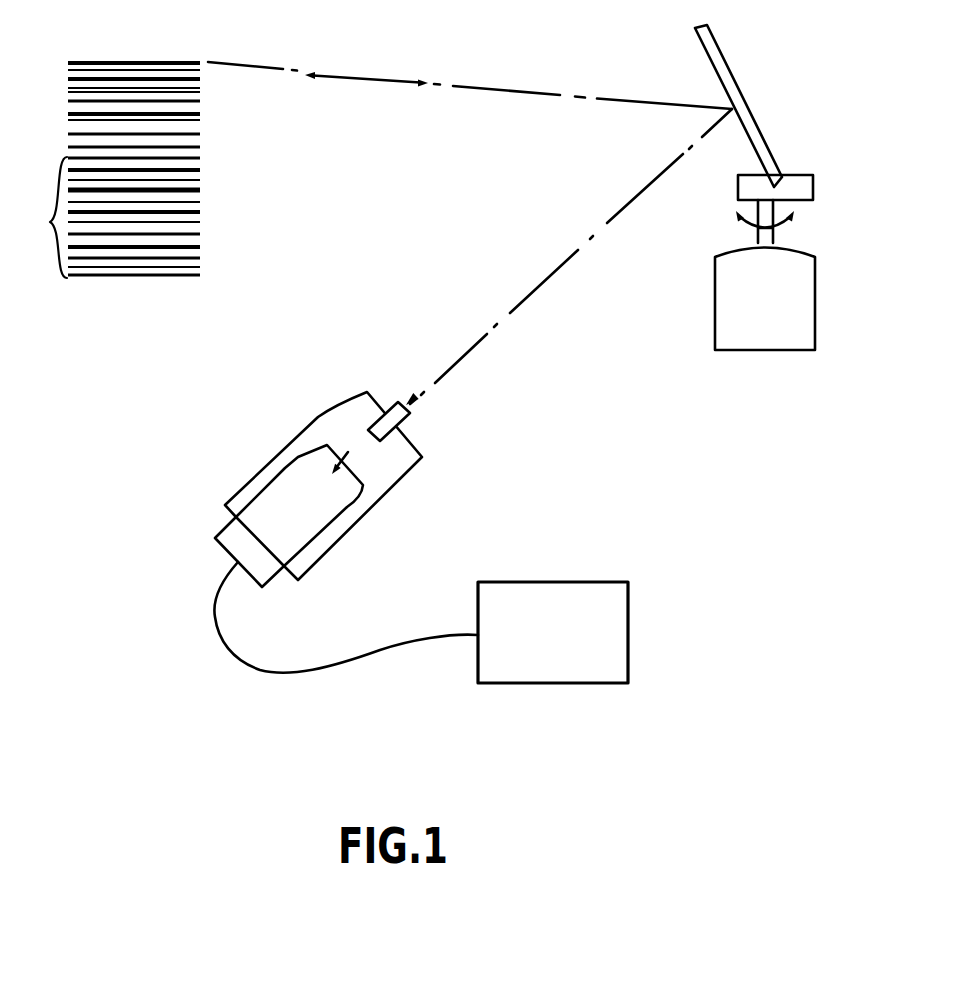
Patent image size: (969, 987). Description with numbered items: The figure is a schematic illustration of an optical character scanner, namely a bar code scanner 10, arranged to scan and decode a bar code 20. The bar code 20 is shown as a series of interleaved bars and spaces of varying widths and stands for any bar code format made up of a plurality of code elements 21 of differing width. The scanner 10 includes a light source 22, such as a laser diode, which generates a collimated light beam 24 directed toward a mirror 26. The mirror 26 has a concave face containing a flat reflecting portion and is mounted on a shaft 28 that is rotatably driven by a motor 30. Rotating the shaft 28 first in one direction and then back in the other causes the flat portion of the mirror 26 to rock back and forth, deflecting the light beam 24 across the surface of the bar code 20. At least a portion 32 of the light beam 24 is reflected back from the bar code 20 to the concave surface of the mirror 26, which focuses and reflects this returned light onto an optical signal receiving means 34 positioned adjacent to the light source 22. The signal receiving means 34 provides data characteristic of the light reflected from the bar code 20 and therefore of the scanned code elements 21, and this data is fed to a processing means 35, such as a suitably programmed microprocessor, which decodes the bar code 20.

The bar code scanner 10 is at (430, 237).
The bar code 20 is at (128, 62).
The code elements 21 is at (42, 217).
The light source 22 is at (320, 424).
The light beam 24 is at (381, 72).
The mirror 26 is at (712, 52).
The shaft 28 is at (777, 210).
The motor 30 is at (718, 297).
The portion of light beam 32 is at (362, 460).
The optical signal receiving means 34 is at (269, 572).
The processing means 35 is at (573, 590).